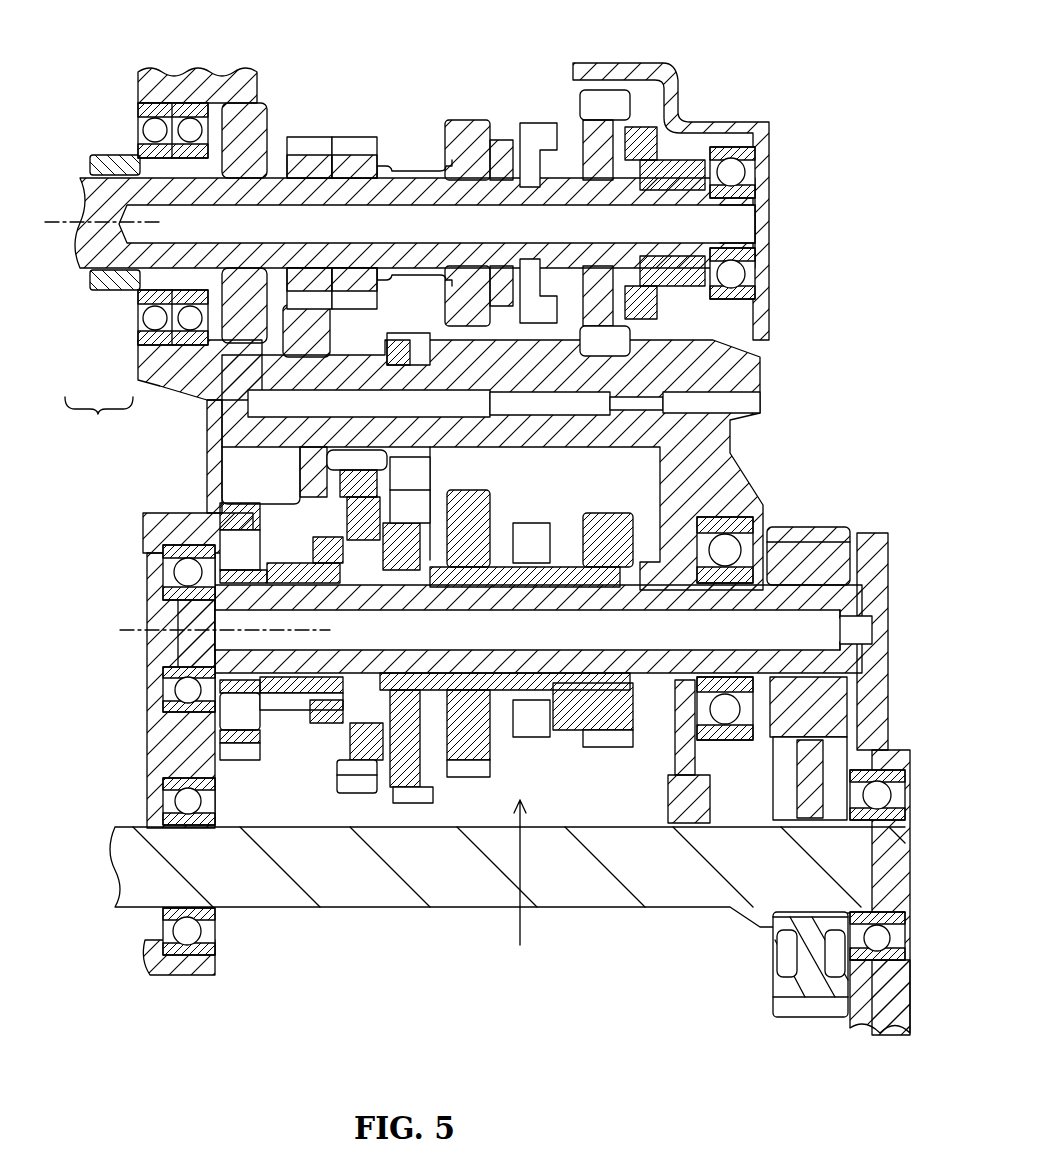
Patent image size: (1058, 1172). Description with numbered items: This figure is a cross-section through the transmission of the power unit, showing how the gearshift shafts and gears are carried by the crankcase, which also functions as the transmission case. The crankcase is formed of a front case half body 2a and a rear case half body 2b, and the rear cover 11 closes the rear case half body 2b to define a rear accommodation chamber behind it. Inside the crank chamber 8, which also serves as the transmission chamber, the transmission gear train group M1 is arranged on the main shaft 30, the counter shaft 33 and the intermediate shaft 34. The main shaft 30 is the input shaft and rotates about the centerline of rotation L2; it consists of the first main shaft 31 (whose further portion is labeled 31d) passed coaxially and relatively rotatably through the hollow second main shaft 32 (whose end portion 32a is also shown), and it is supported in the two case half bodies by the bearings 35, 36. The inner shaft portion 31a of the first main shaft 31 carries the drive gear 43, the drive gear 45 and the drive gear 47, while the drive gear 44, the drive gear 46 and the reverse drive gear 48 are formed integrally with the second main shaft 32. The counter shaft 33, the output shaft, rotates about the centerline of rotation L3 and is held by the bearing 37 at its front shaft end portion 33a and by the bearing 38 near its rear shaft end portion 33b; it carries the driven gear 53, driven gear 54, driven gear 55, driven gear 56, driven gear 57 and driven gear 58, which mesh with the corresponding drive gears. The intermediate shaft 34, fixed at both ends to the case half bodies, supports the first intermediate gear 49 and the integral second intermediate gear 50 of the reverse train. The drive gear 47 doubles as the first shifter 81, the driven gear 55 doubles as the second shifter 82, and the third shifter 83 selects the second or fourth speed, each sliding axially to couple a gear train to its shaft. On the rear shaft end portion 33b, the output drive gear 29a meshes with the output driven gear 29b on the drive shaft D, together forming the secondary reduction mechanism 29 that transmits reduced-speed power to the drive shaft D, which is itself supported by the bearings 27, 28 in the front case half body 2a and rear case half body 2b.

The front case half body 2a is at (180, 525).
The rear case half body 2b is at (727, 365).
The crank chamber 8 is at (630, 470).
The rear cover 11 is at (875, 752).
The bearing 27 is at (210, 930).
The bearing 28 is at (860, 930).
The secondary reduction mechanism 29 is at (810, 560).
The output drive gear 29a is at (836, 649).
The output driven gear 29b is at (817, 987).
The main shaft 30 is at (99, 420).
The first main shaft 31 is at (82, 262).
The inner shaft portion 31a is at (406, 185).
The input shaft end portion 31d is at (742, 197).
The second main shaft 32 is at (120, 292).
The hollow shaft flange 32a is at (130, 155).
The counter shaft 33 is at (568, 600).
The front shaft end portion 33a is at (178, 606).
The rear shaft end portion 33b is at (793, 600).
The intermediate shaft 34 is at (250, 400).
The bearing 35 is at (194, 113).
The bearing 36 is at (745, 148).
The bearing 37 is at (163, 550).
The bearing 38 is at (735, 530).
The drive gear 43 is at (690, 175).
The drive gear 44 is at (368, 137).
The drive gear 45 is at (468, 128).
The drive gear 46 is at (262, 105).
The drive gear 47 is at (575, 193).
The drive gear 48 is at (305, 137).
The first intermediate gear 49 is at (322, 332).
The second intermediate gear 50 is at (415, 343).
The driven gear 53 is at (685, 800).
The driven gear 54 is at (355, 782).
The driven gear 55 is at (508, 744).
The driven gear 56 is at (240, 757).
The driven gear 57 is at (607, 742).
The driven gear 58 is at (425, 800).
The first shifter 81 is at (580, 110).
The second shifter 82 is at (498, 733).
The third shifter 83 is at (318, 728).
The centerline of rotation L2 is at (59, 218).
The centerline of rotation L3 is at (127, 632).
The drive shaft D is at (380, 895).
The transmission gear train group M1 is at (514, 892).